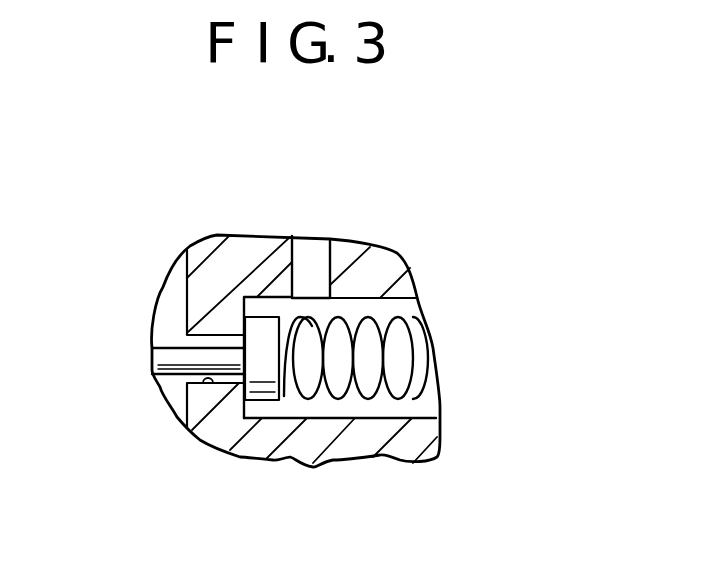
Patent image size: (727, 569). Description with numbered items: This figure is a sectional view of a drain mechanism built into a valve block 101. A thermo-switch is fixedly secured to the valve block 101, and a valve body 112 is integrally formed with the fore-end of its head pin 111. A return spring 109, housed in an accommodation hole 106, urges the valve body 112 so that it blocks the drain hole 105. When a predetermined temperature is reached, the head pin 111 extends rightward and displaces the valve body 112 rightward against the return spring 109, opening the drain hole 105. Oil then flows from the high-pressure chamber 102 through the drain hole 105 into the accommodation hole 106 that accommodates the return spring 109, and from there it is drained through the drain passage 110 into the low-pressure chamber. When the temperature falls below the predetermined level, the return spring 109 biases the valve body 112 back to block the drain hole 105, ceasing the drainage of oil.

The valve block 101 is at (317, 440).
The high-pressure chamber 102 is at (172, 327).
The drain hole 105 is at (208, 383).
The accommodation hole 106 is at (387, 407).
The return spring 109 is at (407, 373).
The drain passage 110 is at (310, 275).
The head pin 111 is at (167, 373).
The valve body 112 is at (263, 330).